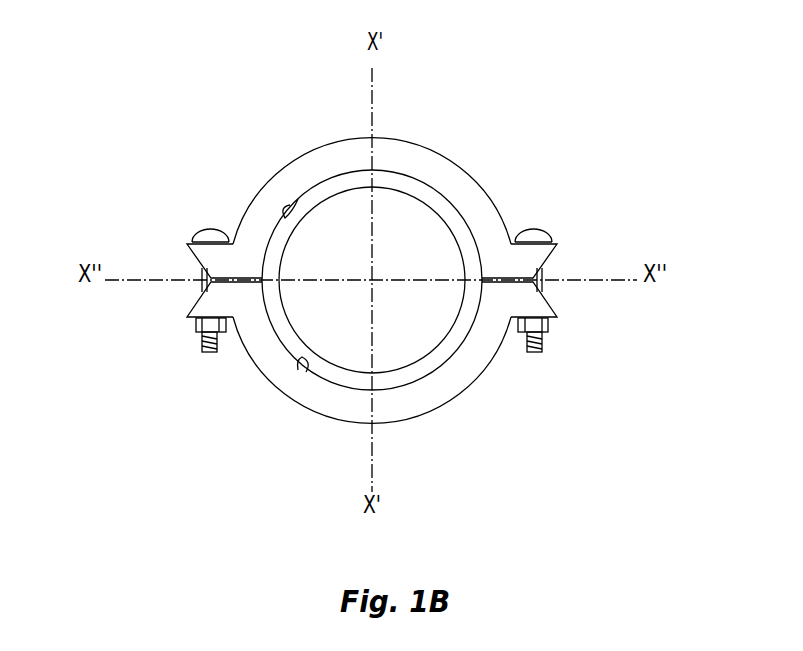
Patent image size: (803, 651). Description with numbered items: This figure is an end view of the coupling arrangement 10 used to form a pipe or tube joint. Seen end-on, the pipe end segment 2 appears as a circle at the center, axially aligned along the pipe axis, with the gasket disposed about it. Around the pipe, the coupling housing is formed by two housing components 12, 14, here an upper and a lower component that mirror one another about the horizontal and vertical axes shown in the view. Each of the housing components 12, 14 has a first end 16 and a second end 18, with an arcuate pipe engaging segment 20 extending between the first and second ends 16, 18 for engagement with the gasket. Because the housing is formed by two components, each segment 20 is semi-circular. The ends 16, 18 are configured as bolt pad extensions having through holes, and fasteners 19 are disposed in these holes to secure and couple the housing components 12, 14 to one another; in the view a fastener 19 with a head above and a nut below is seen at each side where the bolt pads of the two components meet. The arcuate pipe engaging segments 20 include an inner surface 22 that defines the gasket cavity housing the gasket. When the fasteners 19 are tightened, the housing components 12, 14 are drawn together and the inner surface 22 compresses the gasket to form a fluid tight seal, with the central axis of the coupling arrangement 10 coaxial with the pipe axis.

The pipe end segment 2 is at (452, 342).
The coupling arrangement 10 is at (588, 119).
The housing component 12 is at (425, 143).
The housing component 14 is at (453, 400).
The first end 16 is at (557, 248).
The second end 18 is at (190, 302).
The fastener 19 is at (212, 229).
The arcuate pipe engaging segment 20 is at (342, 153).
The inner surface 22 is at (298, 198).